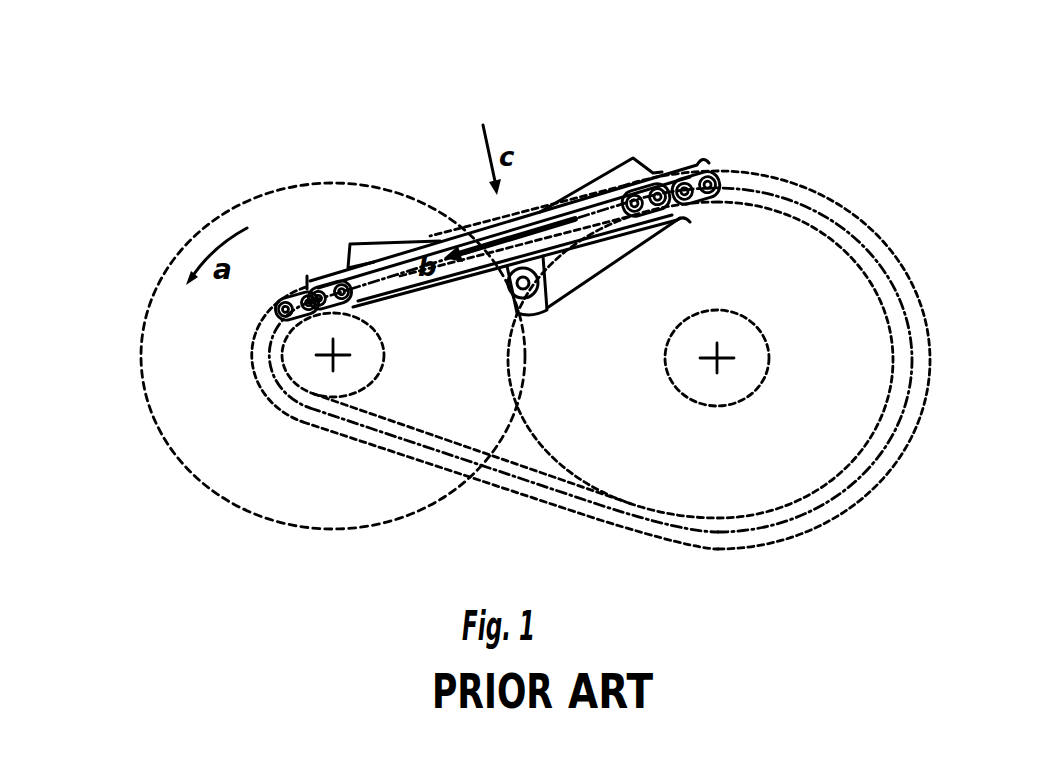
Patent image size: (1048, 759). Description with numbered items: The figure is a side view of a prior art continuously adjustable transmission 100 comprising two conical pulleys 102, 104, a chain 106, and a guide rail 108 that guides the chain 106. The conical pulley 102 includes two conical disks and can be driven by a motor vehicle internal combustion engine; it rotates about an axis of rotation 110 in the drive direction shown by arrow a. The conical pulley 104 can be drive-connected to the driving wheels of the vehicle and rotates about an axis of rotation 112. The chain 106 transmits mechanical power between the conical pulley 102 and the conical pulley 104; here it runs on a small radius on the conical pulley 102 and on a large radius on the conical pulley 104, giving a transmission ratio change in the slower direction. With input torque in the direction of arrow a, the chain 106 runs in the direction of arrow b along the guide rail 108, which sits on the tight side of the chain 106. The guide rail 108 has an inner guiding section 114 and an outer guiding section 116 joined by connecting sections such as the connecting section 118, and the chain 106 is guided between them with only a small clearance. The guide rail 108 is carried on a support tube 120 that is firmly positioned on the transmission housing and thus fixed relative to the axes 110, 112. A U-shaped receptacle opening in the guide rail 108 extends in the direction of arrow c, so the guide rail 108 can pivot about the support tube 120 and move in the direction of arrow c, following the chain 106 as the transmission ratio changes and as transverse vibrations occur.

The continuously adjustable transmission 100 is at (135, 238).
The conical pulley 102 is at (200, 427).
The conical pulley 104 is at (837, 415).
The chain 106 is at (720, 175).
The guide rail 108 is at (350, 252).
The axis of rotation 110 is at (337, 358).
The axis of rotation 112 is at (718, 362).
The inner guiding section 114 is at (608, 232).
The outer guiding section 116 is at (575, 197).
The connecting section 118 is at (492, 232).
The support tube 120 is at (532, 305).